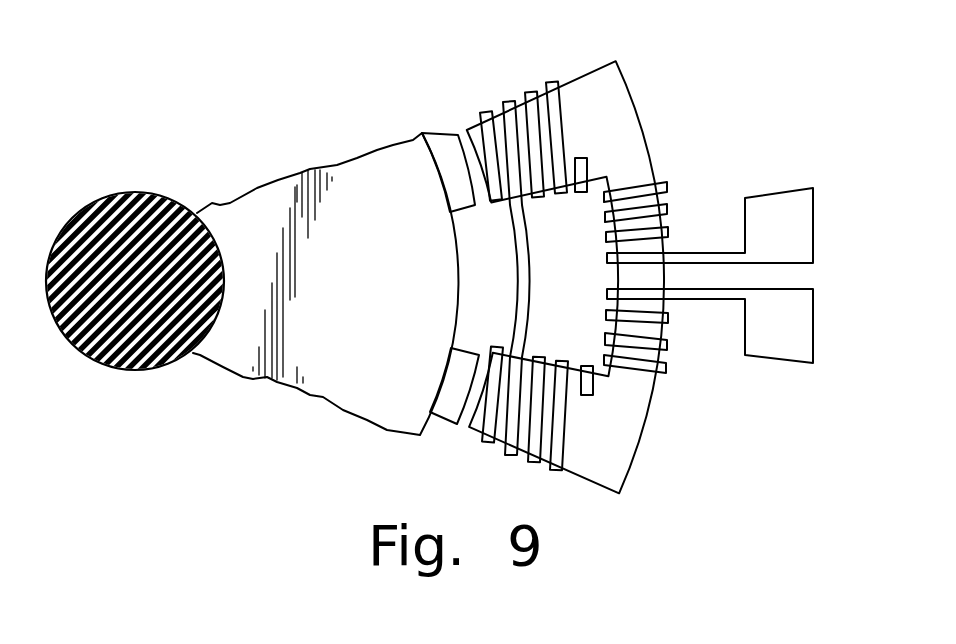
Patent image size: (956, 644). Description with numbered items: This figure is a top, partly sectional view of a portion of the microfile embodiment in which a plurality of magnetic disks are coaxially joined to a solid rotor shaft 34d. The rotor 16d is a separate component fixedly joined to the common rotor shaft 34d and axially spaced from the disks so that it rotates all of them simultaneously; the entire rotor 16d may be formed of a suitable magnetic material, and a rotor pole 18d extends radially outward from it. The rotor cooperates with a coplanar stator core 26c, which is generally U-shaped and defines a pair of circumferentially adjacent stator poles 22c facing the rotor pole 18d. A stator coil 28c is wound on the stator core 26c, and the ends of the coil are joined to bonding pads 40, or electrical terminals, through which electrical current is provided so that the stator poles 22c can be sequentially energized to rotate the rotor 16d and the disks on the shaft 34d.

The rotor shaft 34d is at (133, 192).
The rotor 16d is at (382, 280).
The rotor pole 18d is at (438, 147).
The stator pole 22c is at (465, 424).
The stator core 26c is at (641, 119).
The stator coil 28c is at (552, 80).
The bonding pad 40 is at (815, 237).